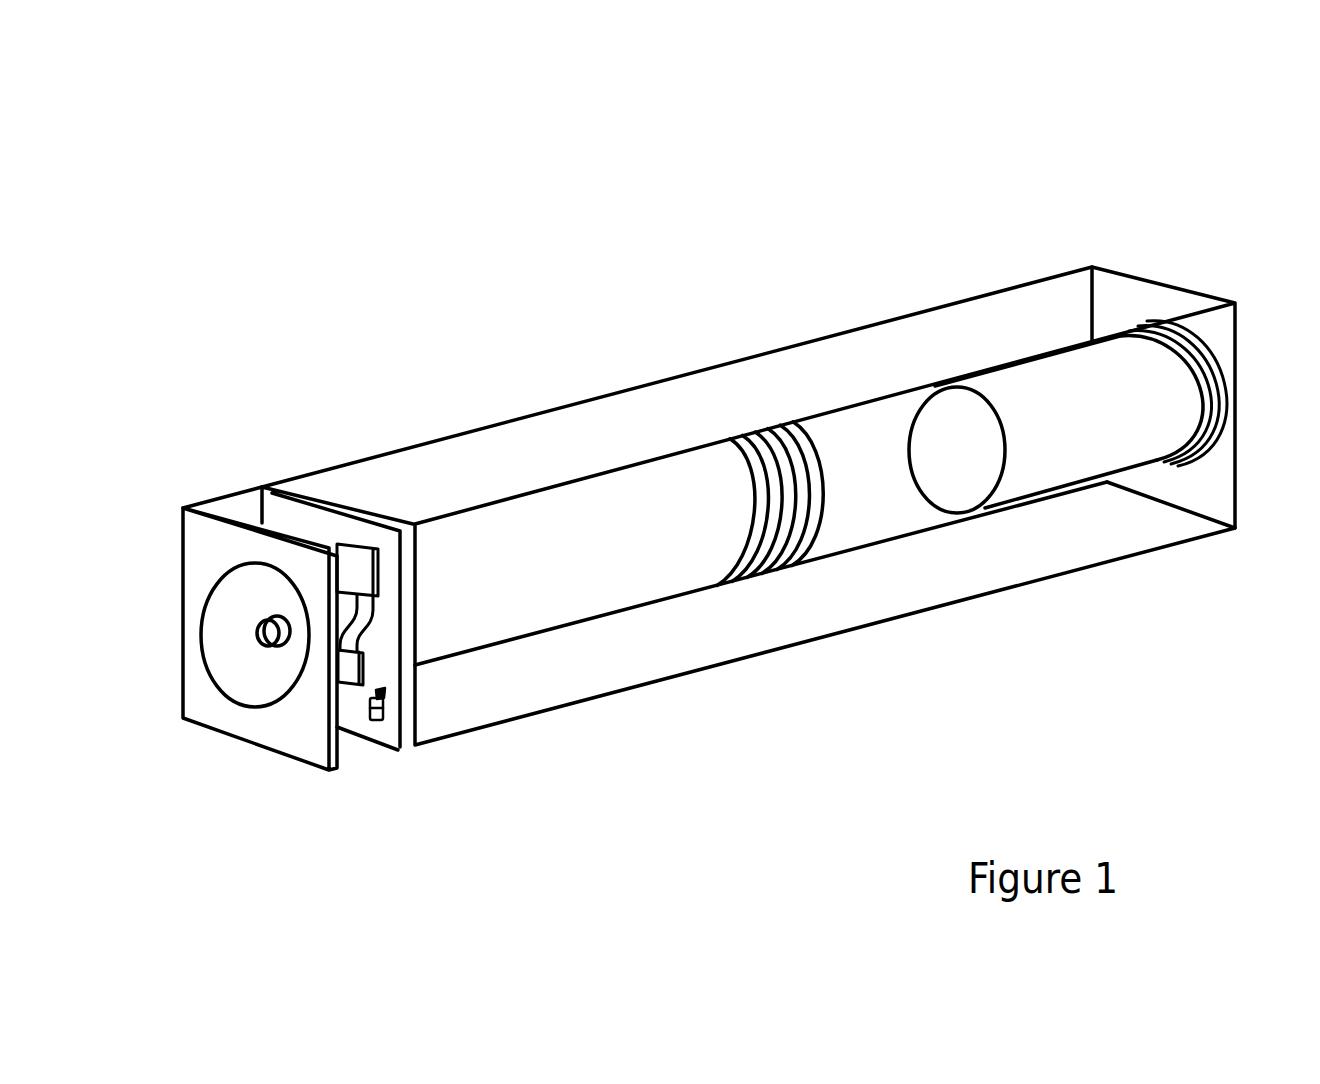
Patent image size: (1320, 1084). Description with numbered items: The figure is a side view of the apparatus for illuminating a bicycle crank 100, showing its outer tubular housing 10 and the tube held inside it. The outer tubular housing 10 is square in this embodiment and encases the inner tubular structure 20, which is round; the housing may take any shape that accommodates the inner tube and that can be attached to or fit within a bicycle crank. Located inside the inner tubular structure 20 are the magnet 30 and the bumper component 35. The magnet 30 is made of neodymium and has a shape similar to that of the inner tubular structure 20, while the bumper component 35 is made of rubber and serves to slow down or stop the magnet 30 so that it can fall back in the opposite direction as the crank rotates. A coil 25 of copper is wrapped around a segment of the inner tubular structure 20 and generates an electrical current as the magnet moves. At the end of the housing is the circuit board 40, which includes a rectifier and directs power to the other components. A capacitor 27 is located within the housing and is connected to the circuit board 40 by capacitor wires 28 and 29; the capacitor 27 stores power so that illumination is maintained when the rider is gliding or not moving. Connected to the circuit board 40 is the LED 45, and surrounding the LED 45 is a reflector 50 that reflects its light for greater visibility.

The apparatus for illuminating a bicycle crank 100 is at (710, 460).
The outer tubular housing 10 is at (600, 393).
The inner tubular structure 20 is at (598, 596).
The coil 25 is at (748, 418).
The capacitor 27 is at (383, 718).
The capacitor wire 28 is at (340, 724).
The capacitor wire 29 is at (383, 692).
The magnet 30 is at (1057, 408).
The bumper component 35 is at (1160, 383).
The circuit board 40 is at (355, 562).
The LED 45 is at (255, 632).
The reflector 50 is at (232, 607).